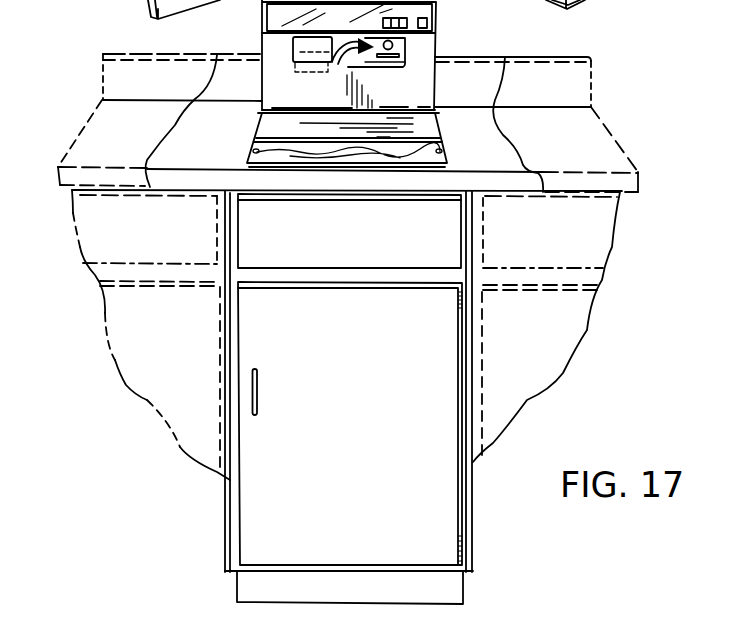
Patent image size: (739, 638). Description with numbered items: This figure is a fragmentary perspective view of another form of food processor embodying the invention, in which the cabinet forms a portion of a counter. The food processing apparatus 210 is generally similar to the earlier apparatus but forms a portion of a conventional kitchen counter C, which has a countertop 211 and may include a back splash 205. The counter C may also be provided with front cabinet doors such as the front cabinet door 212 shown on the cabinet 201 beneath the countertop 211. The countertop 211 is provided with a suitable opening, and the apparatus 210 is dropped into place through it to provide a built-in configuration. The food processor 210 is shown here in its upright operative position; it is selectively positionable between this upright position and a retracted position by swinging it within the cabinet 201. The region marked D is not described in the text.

The cabinet 201 is at (442, 489).
The back splash 205 is at (568, 83).
The food processing apparatus 210 is at (446, 36).
The countertop 211 is at (92, 135).
The front cabinet door 212 is at (257, 512).
The kitchen counter C is at (572, 157).
The cabinet section D is at (118, 372).